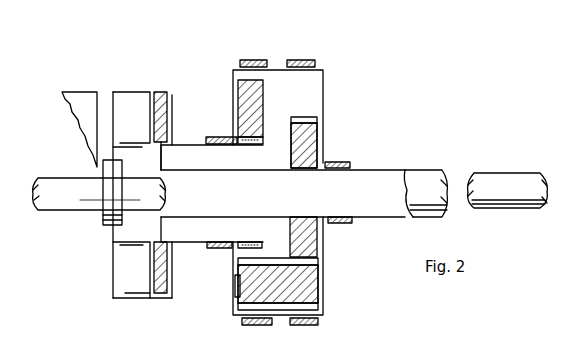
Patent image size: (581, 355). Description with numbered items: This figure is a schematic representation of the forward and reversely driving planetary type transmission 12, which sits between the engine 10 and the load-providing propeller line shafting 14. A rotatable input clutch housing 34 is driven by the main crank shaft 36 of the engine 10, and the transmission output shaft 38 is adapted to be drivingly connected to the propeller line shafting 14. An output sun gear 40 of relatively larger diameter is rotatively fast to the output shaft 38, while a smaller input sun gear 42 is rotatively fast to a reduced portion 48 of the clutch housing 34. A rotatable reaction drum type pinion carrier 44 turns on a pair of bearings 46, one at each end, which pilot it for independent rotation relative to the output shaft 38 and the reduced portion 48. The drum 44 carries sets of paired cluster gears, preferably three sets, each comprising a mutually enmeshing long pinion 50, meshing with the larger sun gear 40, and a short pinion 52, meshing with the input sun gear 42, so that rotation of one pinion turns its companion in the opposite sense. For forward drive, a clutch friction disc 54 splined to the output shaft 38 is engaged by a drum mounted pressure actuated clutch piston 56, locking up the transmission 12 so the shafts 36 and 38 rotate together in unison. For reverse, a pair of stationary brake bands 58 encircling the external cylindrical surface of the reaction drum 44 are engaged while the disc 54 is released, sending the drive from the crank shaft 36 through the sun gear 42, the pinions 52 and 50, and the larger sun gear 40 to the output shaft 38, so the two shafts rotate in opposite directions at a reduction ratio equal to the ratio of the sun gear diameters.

The engine 10 is at (87, 95).
The planetary type transmission 12 is at (104, 302).
The propeller line shafting 14 is at (508, 185).
The input clutch housing 34 is at (137, 92).
The main crank shaft 36 is at (57, 185).
The transmission output shaft 38 is at (423, 173).
The output sun gear 40 is at (313, 133).
The input sun gear 42 is at (248, 241).
The reaction drum type pinion carrier 44 is at (324, 88).
The bearings 46 is at (213, 137).
The reduced portion 48 is at (180, 143).
The long pinion 50 is at (312, 287).
The short pinion 52 is at (247, 90).
The clutch friction disc 54 is at (172, 294).
The clutch piston 56 is at (130, 292).
The brake bands 58 is at (297, 60).